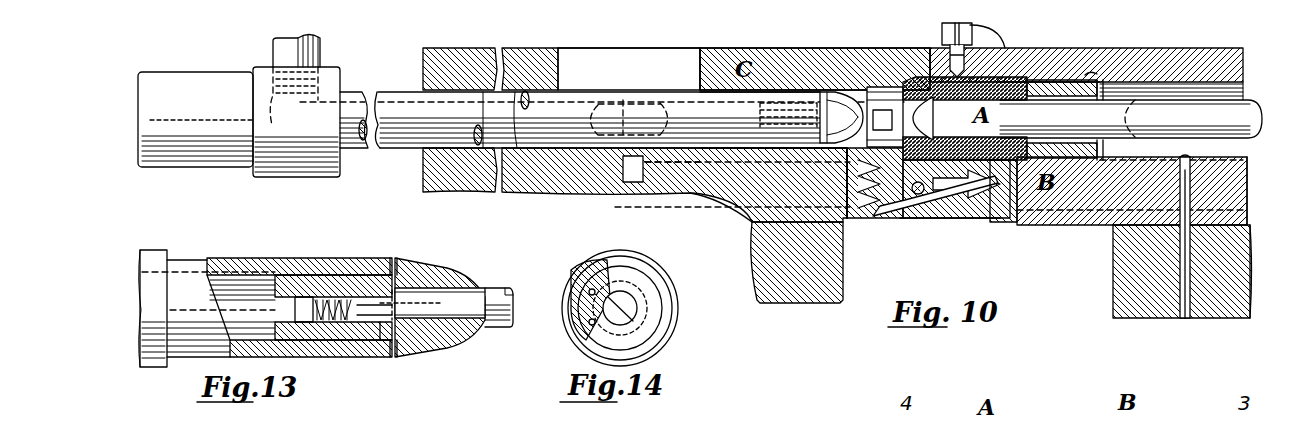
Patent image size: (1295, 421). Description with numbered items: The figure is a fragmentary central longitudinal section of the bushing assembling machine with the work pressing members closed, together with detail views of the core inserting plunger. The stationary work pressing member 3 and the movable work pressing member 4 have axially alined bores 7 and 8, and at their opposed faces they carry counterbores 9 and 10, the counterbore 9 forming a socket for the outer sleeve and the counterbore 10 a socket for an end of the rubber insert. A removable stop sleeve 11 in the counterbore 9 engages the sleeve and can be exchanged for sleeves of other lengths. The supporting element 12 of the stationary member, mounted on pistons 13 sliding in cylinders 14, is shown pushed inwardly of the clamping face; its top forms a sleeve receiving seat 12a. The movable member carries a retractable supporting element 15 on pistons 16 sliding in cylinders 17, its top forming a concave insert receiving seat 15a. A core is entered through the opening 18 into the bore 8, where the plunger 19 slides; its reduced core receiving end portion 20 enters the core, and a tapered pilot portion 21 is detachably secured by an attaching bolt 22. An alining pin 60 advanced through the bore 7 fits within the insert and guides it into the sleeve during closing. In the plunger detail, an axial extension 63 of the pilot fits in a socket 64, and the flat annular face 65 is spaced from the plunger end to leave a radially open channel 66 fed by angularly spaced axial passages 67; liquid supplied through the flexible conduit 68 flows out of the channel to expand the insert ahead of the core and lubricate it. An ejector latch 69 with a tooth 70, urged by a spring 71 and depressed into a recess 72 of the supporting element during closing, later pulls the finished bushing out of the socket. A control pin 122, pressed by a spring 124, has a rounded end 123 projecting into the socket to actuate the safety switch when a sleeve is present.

In FIG. 10, the stationary work pressing member 3 is at (1183, 47).
In FIG. 10, the movable work pressing member 4 is at (775, 47).
In FIG. 10, the bore 7 is at (1243, 88).
In FIG. 10, the bore 8 is at (882, 87).
In FIG. 10, the counterbore 9 is at (1050, 67).
In FIG. 10, the counterbore 10 is at (900, 47).
In FIG. 10, the stop sleeve 11 is at (1090, 72).
In FIG. 10, the supporting element 12 is at (1005, 222).
In FIG. 10, the sleeve receiving seat 12a is at (998, 128).
In FIG. 10, the pistons 13 is at (1093, 232).
In FIG. 10, the cylinders 14 is at (1247, 206).
In FIG. 10, the retractable supporting element 15 is at (857, 218).
In FIG. 10, the insert receiving seat 15a is at (873, 128).
In FIG. 10, the pistons 16 is at (743, 222).
In FIG. 10, the cylinders 17 is at (703, 181).
In FIG. 10, the opening 18 is at (700, 62).
In FIG. 10, the plunger 19 is at (407, 150).
In FIG. 13, the plunger 19 is at (158, 250).
In FIG. 14, the plunger 19 is at (590, 257).
In FIG. 10, the core receiving end portion 20 is at (745, 130).
In FIG. 13, the core receiving end portion 20 is at (245, 258).
In FIG. 14, the core receiving end portion 20 is at (650, 265).
In FIG. 10, the tapered pilot portion 21 is at (840, 90).
In FIG. 13, the tapered pilot portion 21 is at (455, 268).
In FIG. 14, the tapered pilot portion 21 is at (662, 310).
In FIG. 13, the attaching bolt 22 is at (503, 330).
In FIG. 14, the attaching bolt 22 is at (640, 330).
In FIG. 10, the alining pin 60 is at (1172, 118).
In FIG. 13, the axial extension 63 is at (380, 340).
In FIG. 13, the socket 64 is at (360, 290).
In FIG. 13, the flat annular face 65 is at (393, 258).
In FIG. 10, the channel 66 is at (818, 150).
In FIG. 13, the channel 66 is at (393, 353).
In FIG. 10, the axial passages 67 is at (777, 150).
In FIG. 13, the axial passages 67 is at (303, 275).
In FIG. 14, the axial passages 67 is at (588, 322).
In FIG. 10, the flexible conduit 68 is at (273, 48).
In FIG. 10, the ejector latch 69 is at (902, 205).
In FIG. 10, the tooth 70 is at (957, 216).
In FIG. 10, the spring 71 is at (868, 218).
In FIG. 10, the recess 72 is at (927, 208).
In FIG. 10, the control pin 122 is at (1006, 37).
In FIG. 10, the rounded end 123 is at (957, 100).
In FIG. 10, the spring 124 is at (943, 35).